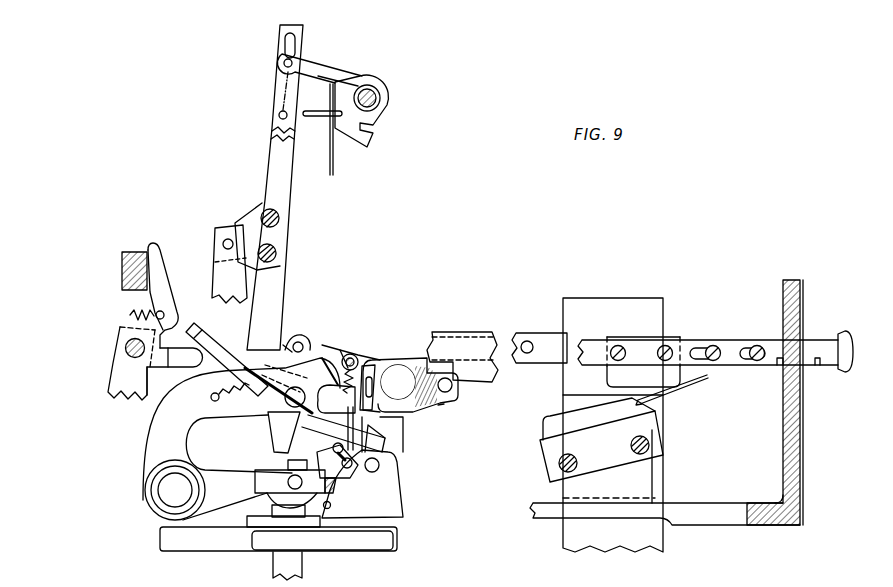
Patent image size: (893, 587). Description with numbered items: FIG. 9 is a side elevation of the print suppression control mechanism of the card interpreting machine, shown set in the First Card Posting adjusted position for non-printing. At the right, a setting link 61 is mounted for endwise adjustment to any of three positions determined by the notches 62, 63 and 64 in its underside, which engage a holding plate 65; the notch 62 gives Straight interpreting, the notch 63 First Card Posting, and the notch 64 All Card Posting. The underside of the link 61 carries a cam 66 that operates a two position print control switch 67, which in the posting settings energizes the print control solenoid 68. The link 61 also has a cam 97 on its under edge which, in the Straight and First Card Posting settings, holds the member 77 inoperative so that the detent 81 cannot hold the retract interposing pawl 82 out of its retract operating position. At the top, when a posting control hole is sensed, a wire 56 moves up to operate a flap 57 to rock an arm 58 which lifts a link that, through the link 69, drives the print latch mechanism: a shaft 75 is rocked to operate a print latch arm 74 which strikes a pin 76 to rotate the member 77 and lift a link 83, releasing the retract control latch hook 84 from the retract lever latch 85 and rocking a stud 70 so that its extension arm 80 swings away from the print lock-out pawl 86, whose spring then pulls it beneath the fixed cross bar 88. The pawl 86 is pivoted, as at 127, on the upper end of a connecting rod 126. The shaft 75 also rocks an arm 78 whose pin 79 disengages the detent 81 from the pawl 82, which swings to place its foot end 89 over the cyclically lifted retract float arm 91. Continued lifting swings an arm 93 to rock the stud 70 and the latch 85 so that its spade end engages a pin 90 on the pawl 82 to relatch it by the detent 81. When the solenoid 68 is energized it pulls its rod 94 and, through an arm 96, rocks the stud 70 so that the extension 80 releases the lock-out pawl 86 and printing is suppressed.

The posting control wire 56 is at (333, 176).
The flap 57 is at (311, 120).
The arm 58 is at (347, 78).
The setting link 61 is at (735, 340).
The notch 62 is at (818, 367).
The notch 63 is at (841, 335).
The notch 64 is at (779, 367).
The holding plate 65 is at (802, 428).
The cam 66 is at (612, 380).
The print control switch 67 is at (660, 404).
The print control solenoid 68 is at (662, 304).
The link 69 is at (222, 275).
The stud 70 is at (278, 422).
The print latch arm 74 is at (462, 345).
The shaft 75 is at (423, 353).
The pin 76 is at (452, 395).
The member 77 is at (443, 408).
The arm 78 is at (356, 356).
The pin 79 is at (374, 362).
The extension arm 80 is at (240, 346).
The detent 81 is at (346, 352).
The retract interposing pawl 82 is at (334, 345).
The link 83 is at (360, 402).
The retract control latch hook 84 is at (400, 428).
The retract lever latch 85 is at (332, 424).
The print lock-out pawl 86 is at (185, 368).
The fixed cross bar 88 is at (137, 250).
The foot end 89 is at (270, 448).
The pin 90 is at (287, 345).
The retract float arm 91 is at (224, 520).
The arm 93 is at (239, 444).
The rod 94 is at (399, 382).
The arm 96 is at (300, 342).
The cam 97 is at (496, 372).
The connecting rod 126 is at (126, 398).
The pivot 127 is at (126, 349).